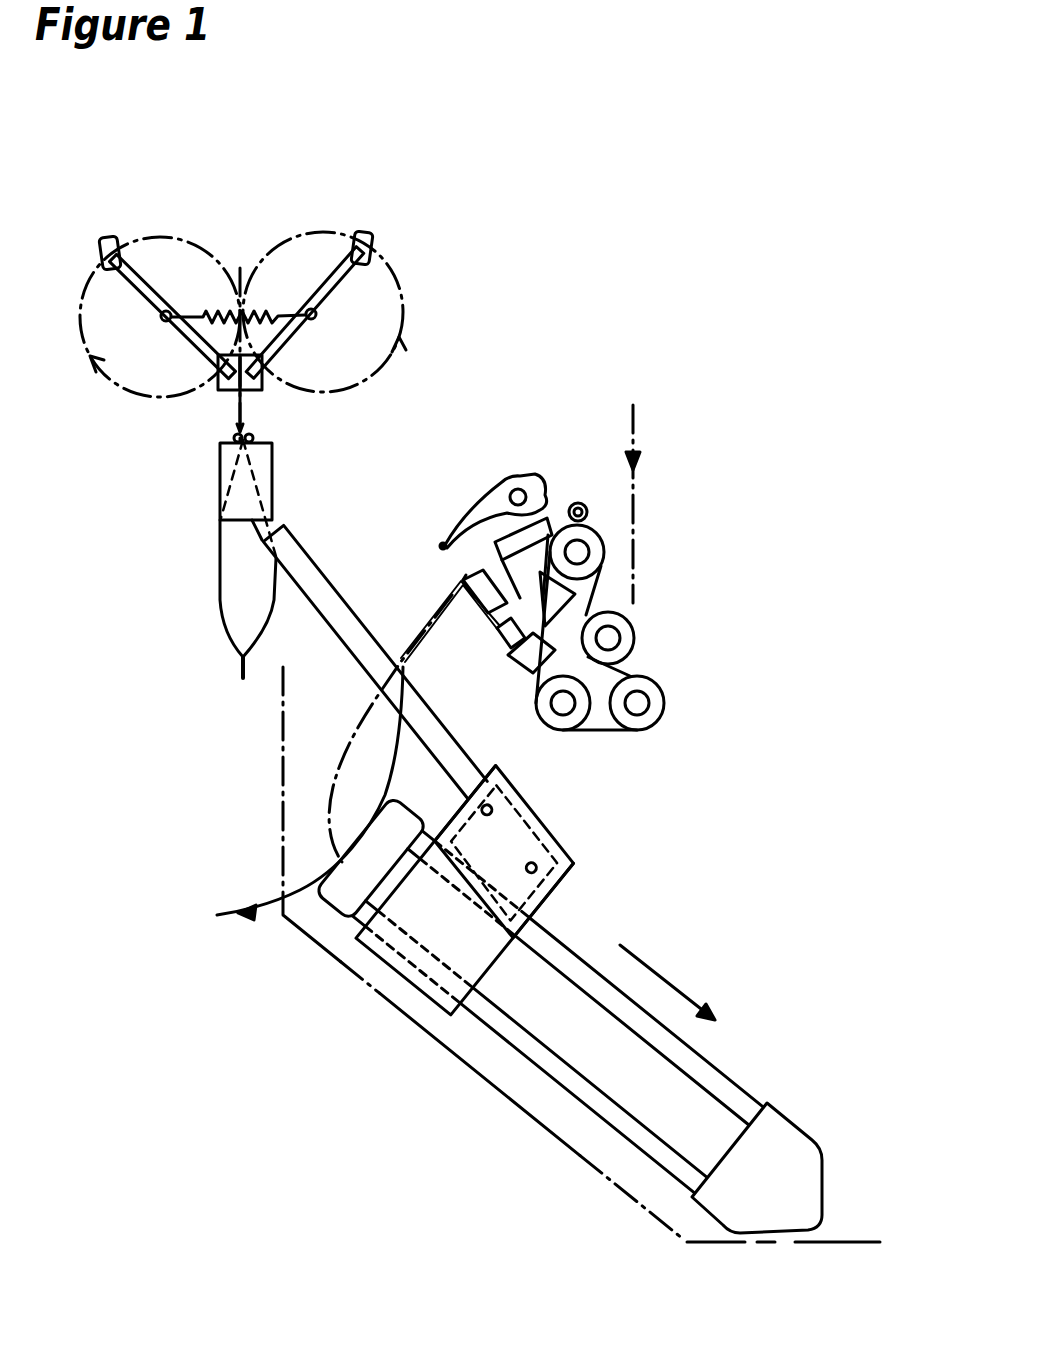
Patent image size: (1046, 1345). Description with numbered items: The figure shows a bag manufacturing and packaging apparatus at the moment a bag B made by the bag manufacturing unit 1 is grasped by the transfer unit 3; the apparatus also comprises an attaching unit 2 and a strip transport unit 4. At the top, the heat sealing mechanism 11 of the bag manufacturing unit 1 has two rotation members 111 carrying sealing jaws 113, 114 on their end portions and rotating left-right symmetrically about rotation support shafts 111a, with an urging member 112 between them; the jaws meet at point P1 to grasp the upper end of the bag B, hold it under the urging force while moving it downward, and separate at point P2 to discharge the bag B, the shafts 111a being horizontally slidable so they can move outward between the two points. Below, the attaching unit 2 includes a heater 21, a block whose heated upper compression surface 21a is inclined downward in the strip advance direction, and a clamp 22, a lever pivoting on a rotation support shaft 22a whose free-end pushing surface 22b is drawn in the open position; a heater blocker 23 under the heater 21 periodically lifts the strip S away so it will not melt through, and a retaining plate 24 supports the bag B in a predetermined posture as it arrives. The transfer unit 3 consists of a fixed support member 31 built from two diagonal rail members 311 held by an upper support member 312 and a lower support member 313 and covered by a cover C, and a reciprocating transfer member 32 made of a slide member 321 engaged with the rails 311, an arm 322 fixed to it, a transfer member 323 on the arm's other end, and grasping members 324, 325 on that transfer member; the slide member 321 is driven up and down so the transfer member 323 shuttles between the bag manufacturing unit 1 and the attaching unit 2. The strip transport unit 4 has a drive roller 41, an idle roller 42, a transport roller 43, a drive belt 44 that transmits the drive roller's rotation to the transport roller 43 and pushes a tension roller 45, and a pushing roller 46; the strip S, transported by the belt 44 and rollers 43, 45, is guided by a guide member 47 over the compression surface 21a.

The bag manufacturing unit 1 is at (517, 303).
The heat sealing mechanism 11 is at (412, 257).
The rotation members 111 is at (183, 350).
The rotation support shafts 111a is at (170, 311).
The urging member 112 is at (267, 312).
The sealing jaw 113 is at (111, 237).
The sealing jaw 114 is at (361, 231).
The point P1 is at (240, 268).
The point P2 is at (263, 425).
The attaching unit 2 is at (421, 592).
The heater 21 is at (523, 623).
The compression surface 21a is at (462, 581).
The clamp 22 is at (462, 508).
The rotation support shaft 22a is at (518, 489).
The pushing surface 22b is at (440, 547).
The heater blocker 23 is at (517, 669).
The retaining plate 24 is at (428, 648).
The transfer unit 3 is at (705, 850).
The fixed support member 31 is at (603, 1114).
The rail members 311 is at (527, 1077).
The upper support member 312 is at (338, 912).
The lower support member 313 is at (700, 1207).
The reciprocating transfer member 32 is at (482, 748).
The slide member 321 is at (576, 850).
The arm 322 is at (325, 602).
The transfer member 323 is at (220, 507).
The grasping member 324 is at (230, 440).
The grasping member 325 is at (256, 443).
The strip transport unit 4 is at (724, 572).
The drive roller 41 is at (665, 708).
The idle roller 42 is at (568, 733).
The transport roller 43 is at (605, 551).
The drive belt 44 is at (625, 670).
The tension roller 45 is at (620, 615).
The pushing roller 46 is at (590, 513).
The guide member 47 is at (553, 518).
The bag B is at (218, 600).
The cover C is at (800, 1245).
The strip S is at (646, 462).